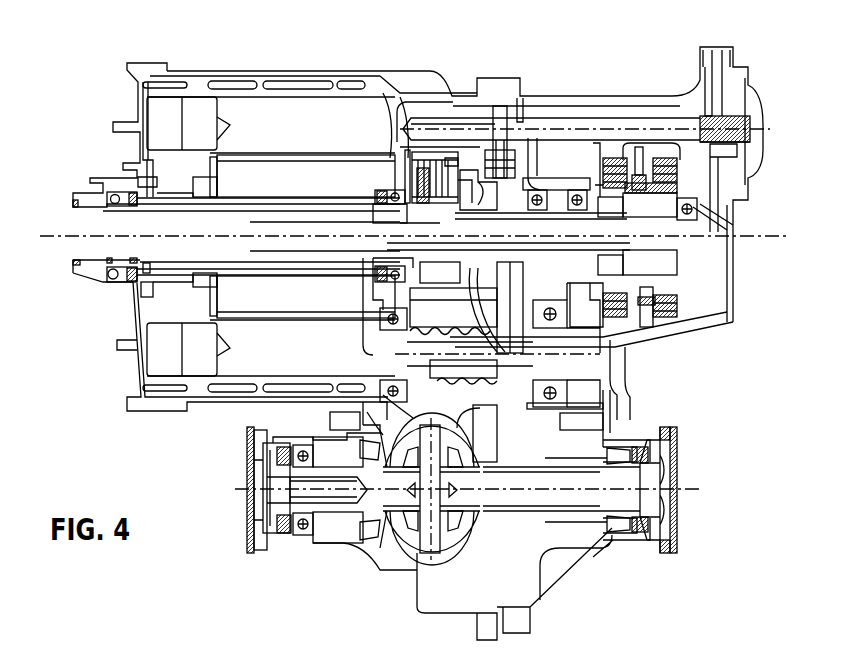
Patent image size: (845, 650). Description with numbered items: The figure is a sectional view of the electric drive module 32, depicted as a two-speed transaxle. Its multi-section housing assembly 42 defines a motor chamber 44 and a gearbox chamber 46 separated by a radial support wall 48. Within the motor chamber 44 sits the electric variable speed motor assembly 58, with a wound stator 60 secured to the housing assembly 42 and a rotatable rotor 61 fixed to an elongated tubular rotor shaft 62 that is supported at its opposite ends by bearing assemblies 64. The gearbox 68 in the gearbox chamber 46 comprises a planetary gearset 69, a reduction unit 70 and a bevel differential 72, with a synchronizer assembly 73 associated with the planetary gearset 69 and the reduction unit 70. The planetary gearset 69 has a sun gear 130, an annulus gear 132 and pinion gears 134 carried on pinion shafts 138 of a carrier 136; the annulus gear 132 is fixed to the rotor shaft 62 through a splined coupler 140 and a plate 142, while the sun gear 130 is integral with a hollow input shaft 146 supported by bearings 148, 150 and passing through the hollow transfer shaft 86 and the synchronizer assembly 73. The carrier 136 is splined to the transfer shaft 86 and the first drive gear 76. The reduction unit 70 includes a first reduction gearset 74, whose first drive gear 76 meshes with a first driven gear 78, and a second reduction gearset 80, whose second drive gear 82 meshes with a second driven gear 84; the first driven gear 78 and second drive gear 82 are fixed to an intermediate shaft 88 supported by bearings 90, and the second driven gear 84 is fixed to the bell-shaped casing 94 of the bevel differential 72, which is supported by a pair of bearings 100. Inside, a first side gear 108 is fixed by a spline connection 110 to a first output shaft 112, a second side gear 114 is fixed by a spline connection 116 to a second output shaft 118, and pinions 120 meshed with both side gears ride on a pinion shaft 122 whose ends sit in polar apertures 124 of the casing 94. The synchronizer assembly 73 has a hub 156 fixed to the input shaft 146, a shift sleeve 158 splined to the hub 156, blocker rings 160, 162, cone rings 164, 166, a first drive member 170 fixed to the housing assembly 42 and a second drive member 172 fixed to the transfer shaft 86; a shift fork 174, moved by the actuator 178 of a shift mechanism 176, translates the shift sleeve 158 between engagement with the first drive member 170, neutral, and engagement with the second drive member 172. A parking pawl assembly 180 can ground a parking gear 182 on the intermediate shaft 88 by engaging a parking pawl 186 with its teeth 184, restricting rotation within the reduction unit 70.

The electric drive module 32 is at (388, 72).
The multi-section housing assembly 42 is at (618, 96).
The motor chamber 44 is at (188, 181).
The gearbox chamber 46 is at (577, 179).
The radial support wall 48 is at (402, 158).
The electric variable speed motor assembly 58 is at (128, 104).
The wound stator 60 is at (253, 102).
The rotor 61 is at (280, 175).
The rotor shaft 62 is at (233, 206).
The bearing assemblies 64 is at (113, 281).
The gearbox 68 is at (488, 136).
The planetary gearset 69 is at (424, 143).
The reduction unit 70 is at (488, 300).
The bevel differential 72 is at (382, 561).
The synchronizer assembly 73 is at (612, 145).
The first reduction gearset 74 is at (512, 128).
The first drive gear 76 is at (530, 181).
The first driven gear 78 is at (503, 413).
The second reduction gearset 80 is at (463, 306).
The second drive gear 82 is at (414, 323).
The second driven gear 84 is at (481, 378).
The transfer shaft 86 is at (557, 212).
The intermediate shaft 88 is at (603, 337).
The bearings 90 is at (547, 319).
The casing 94 is at (373, 445).
The bearings 100 is at (318, 444).
The first side gear 108 is at (383, 522).
The spline connection 110 is at (370, 494).
The first output shaft 112 is at (263, 534).
The second side gear 114 is at (484, 507).
The spline connection 116 is at (473, 468).
The second output shaft 118 is at (650, 536).
The pinions 120 is at (417, 423).
The pinion shaft 122 is at (431, 533).
The polar apertures 124 is at (438, 430).
The sun gear 130 is at (477, 272).
The annulus gear 132 is at (437, 156).
The pinion gears 134 is at (450, 164).
The carrier 136 is at (475, 206).
The pinion shafts 138 is at (445, 180).
The splined coupler 140 is at (375, 218).
The plate 142 is at (405, 171).
The hollow input shaft 146 is at (645, 253).
The bearing 148 is at (390, 239).
The bearing 150 is at (648, 212).
The hub 156 is at (627, 223).
The shift sleeve 158 is at (648, 185).
The blocker ring 160 is at (603, 183).
The blocker ring 162 is at (670, 188).
The cone ring 164 is at (608, 145).
The cone ring 166 is at (665, 185).
The first drive member 170 is at (700, 193).
The second drive member 172 is at (650, 195).
The shift fork 174 is at (640, 147).
The shift mechanism 176 is at (573, 107).
The actuator 178 is at (764, 77).
The parking pawl assembly 180 is at (614, 395).
The parking gear 182 is at (610, 378).
The teeth 184 is at (610, 420).
The parking pawl 186 is at (590, 430).